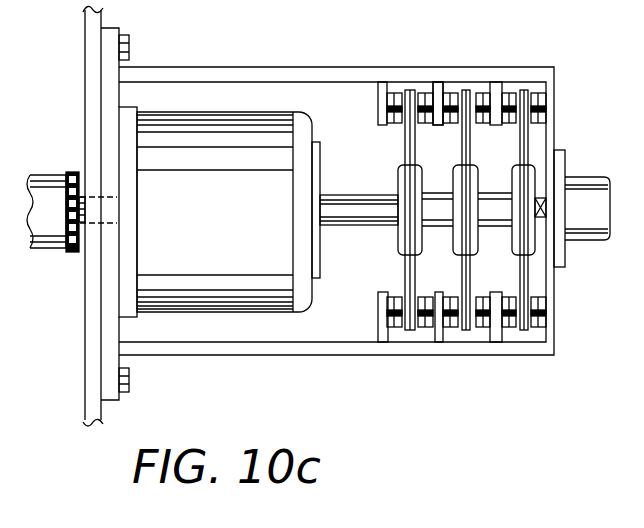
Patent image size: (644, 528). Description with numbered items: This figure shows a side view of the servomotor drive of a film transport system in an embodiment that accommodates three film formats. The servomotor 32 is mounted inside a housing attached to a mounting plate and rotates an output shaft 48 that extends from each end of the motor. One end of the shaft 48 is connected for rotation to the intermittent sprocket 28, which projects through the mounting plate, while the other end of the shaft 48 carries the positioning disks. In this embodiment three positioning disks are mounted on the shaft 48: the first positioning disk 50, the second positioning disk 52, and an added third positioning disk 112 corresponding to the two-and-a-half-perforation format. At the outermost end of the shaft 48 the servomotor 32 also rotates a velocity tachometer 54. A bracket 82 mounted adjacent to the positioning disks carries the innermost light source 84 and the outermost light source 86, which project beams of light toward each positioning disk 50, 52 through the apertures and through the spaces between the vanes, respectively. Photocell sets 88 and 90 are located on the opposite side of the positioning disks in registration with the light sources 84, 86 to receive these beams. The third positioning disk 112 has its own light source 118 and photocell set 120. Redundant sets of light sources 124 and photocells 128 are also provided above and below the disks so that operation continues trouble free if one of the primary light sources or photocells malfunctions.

The intermittent sprocket 28 is at (47, 242).
The servomotor 32 is at (237, 303).
The output shaft 48 is at (344, 214).
The first positioning disk 50 is at (521, 151).
The second positioning disk 52 is at (465, 153).
The velocity tachometer 54 is at (580, 232).
The bracket 82 is at (243, 352).
The innermost light source 84 is at (507, 300).
The outermost light source 86 is at (505, 332).
The photocell set 88 is at (545, 322).
The photocell set 90 is at (448, 332).
The third positioning disk 112 is at (410, 152).
The light source 118 is at (428, 335).
The photocell set 120 is at (393, 330).
The redundant light sources 124 is at (431, 94).
The redundant photocells 128 is at (393, 97).